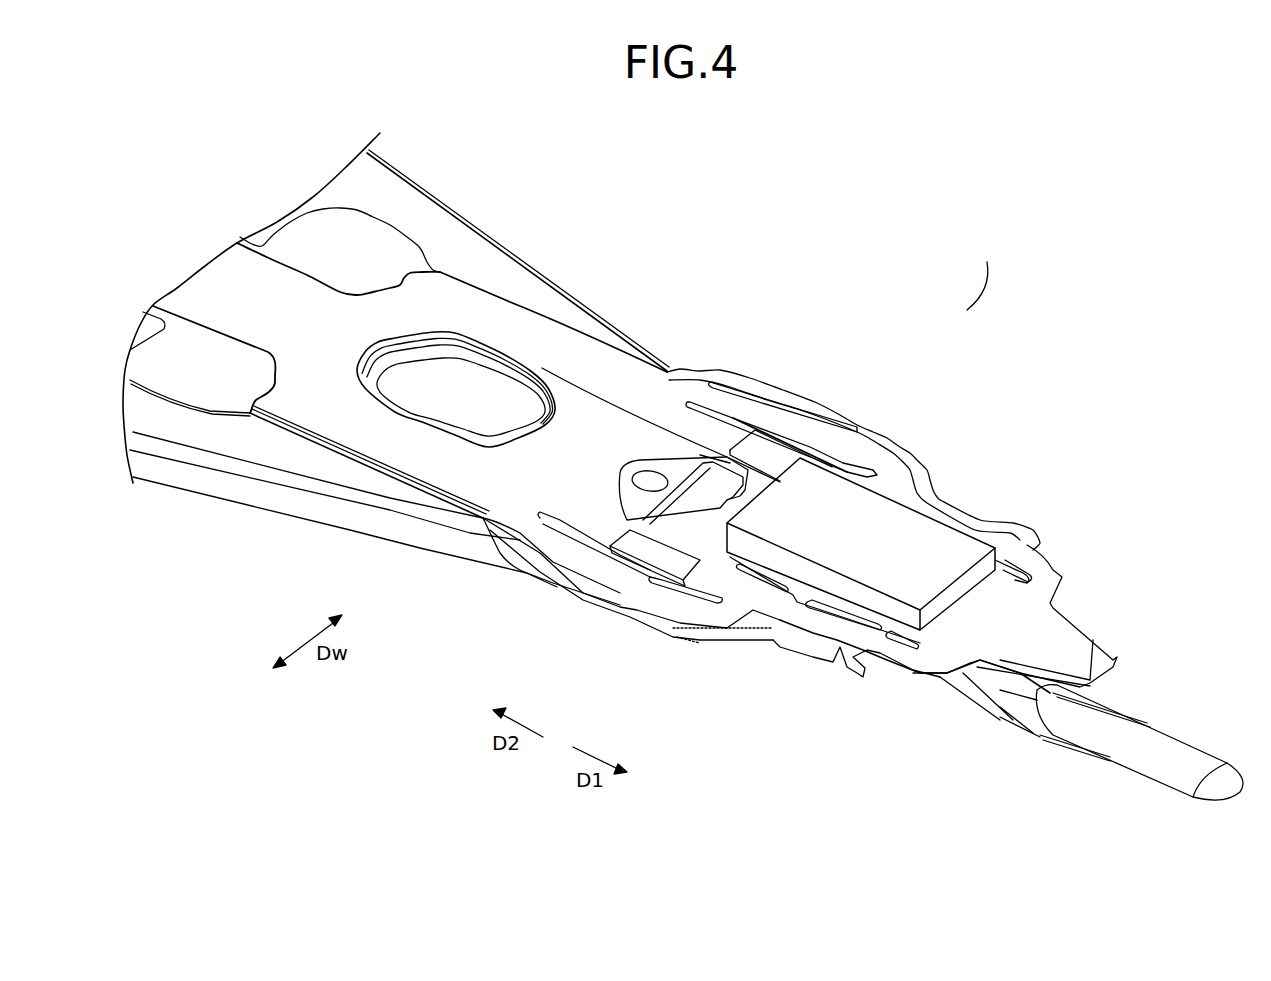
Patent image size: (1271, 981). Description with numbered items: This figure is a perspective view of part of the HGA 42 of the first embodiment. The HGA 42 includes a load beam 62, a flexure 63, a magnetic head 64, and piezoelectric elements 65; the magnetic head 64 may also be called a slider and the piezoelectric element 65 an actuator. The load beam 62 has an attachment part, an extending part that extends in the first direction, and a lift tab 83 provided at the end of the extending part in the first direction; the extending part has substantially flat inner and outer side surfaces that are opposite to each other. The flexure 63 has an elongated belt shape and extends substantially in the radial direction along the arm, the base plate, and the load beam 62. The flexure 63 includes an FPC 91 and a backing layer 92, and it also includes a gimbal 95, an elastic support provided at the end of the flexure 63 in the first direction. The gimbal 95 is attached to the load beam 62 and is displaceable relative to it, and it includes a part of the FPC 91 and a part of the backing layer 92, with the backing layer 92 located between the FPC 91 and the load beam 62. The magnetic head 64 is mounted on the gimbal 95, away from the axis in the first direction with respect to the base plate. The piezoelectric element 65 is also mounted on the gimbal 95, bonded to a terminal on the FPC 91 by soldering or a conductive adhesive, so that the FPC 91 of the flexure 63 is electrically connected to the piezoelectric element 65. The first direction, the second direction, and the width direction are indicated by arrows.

The HGA 42 is at (963, 316).
The load beam 62 is at (472, 262).
The flexure 63 is at (1060, 570).
The magnetic head 64 is at (930, 535).
The piezoelectric element 65 is at (663, 557).
The lift tab 83 is at (1173, 753).
The FPC 91 is at (597, 568).
The backing layer 92 is at (557, 578).
The gimbal 95 is at (1004, 584).